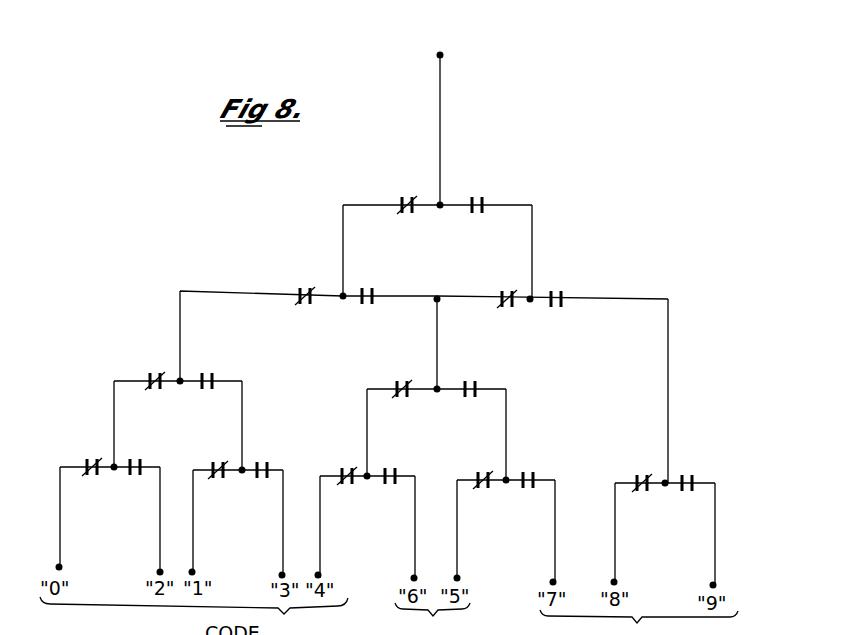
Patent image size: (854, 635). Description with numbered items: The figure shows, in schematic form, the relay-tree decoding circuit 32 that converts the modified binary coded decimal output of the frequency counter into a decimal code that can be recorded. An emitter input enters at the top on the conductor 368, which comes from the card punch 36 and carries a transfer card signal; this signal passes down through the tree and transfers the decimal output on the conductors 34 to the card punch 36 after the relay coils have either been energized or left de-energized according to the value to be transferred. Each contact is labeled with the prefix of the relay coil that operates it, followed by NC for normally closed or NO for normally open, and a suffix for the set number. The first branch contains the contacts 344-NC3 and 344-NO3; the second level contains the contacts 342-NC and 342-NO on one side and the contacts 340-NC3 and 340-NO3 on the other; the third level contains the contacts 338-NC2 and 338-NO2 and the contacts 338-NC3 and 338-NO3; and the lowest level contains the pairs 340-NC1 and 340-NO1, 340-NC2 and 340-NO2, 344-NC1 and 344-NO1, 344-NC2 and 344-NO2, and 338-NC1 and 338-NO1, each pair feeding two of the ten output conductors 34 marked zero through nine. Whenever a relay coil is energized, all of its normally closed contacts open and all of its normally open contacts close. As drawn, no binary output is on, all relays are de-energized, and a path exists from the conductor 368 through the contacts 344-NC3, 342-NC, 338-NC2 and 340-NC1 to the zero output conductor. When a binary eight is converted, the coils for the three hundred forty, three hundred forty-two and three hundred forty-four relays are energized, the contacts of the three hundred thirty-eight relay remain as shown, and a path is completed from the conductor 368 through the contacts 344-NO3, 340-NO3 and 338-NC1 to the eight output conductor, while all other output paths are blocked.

The card punch 36 is at (464, 34).
The conductor 368 is at (441, 112).
The switching network 32 is at (633, 249).
The conductors 34 is at (389, 616).
The normally closed contacts 344-NC3 is at (398, 201).
The normally open contacts 344-NO3 is at (502, 184).
The normally closed contacts 342-NC is at (298, 292).
The normally open contacts 342-NO is at (388, 272).
The normally closed contacts 340-NC3 is at (499, 295).
The normally open contacts 340-NO3 is at (582, 279).
The normally closed contacts 338-NC2 is at (148, 376).
The normally open contacts 338-NO2 is at (232, 360).
The normally closed contacts 338-NC3 is at (395, 385).
The normally open contacts 338-NO3 is at (497, 367).
The normally closed contacts 340-NC1 is at (85, 464).
The normally open contacts 340-NO1 is at (127, 479).
The normally closed contacts 340-NC2 is at (211, 467).
The normally open contacts 340-NO2 is at (254, 482).
The normally closed contacts 344-NC1 is at (340, 472).
The normally open contacts 344-NO1 is at (381, 487).
The normally closed contacts 344-NC2 is at (476, 476).
The normally open contacts 344-NO2 is at (519, 490).
The normally closed contacts 338-NC1 is at (635, 477).
The normally open contacts 338-NO1 is at (678, 492).